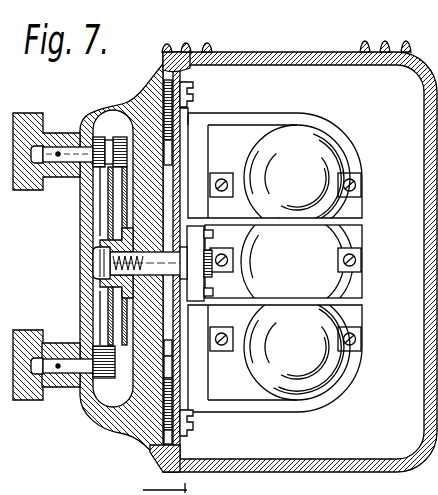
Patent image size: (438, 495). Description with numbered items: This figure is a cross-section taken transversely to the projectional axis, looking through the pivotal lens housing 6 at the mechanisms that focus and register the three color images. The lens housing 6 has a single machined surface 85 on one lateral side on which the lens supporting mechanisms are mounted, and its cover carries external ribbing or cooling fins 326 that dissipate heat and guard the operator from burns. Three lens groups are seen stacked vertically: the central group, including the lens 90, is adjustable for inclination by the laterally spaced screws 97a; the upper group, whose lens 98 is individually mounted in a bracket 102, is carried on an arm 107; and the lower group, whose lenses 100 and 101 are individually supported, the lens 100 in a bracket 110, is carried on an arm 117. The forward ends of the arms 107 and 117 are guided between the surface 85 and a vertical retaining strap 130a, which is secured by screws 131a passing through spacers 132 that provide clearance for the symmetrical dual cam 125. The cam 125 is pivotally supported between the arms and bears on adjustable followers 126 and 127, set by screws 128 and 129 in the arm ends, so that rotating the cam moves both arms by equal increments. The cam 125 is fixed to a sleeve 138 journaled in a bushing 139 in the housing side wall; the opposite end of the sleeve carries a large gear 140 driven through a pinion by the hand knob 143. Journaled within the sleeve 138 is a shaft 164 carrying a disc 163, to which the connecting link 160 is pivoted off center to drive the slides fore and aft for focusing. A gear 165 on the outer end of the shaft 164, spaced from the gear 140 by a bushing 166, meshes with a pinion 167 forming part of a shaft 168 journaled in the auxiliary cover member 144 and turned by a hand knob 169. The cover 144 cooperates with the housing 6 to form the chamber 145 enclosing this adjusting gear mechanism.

The pivotal lens housing 6 is at (323, 50).
The ribbing or cooling fins 326 is at (406, 46).
The screw 128 is at (148, 74).
The hand knob 143 is at (30, 114).
The bracket 102 is at (74, 146).
The lens 101 is at (116, 140).
The hand knob 169 is at (30, 403).
The pinion 167 is at (89, 405).
The shaft 168 is at (75, 378).
The gear 165 is at (107, 193).
The chamber 145 is at (103, 319).
The gear 140 is at (119, 206).
The sleeve 138 is at (120, 223).
The bushing 139 is at (128, 293).
The lens 90 is at (330, 240).
The symmetrical cam 125 is at (185, 211).
The lens 98 is at (315, 150).
The bracket 110 is at (248, 400).
The laterally spaced screws 97a is at (229, 306).
The lens 100 is at (317, 370).
The auxiliary cover member 144 is at (85, 286).
The bushing 166 is at (105, 236).
The shaft 164 is at (203, 243).
The connecting link 160 is at (210, 268).
The disc 163 is at (206, 291).
The vertical retaining strap 130a is at (170, 130).
The follower 126 is at (168, 160).
The follower 127 is at (175, 383).
The arm 117 is at (175, 392).
The screw 129 is at (192, 410).
The screws 131a is at (194, 84).
The arm 107 is at (183, 122).
The machined surface 85 is at (168, 57).
The spacers 132 is at (207, 58).